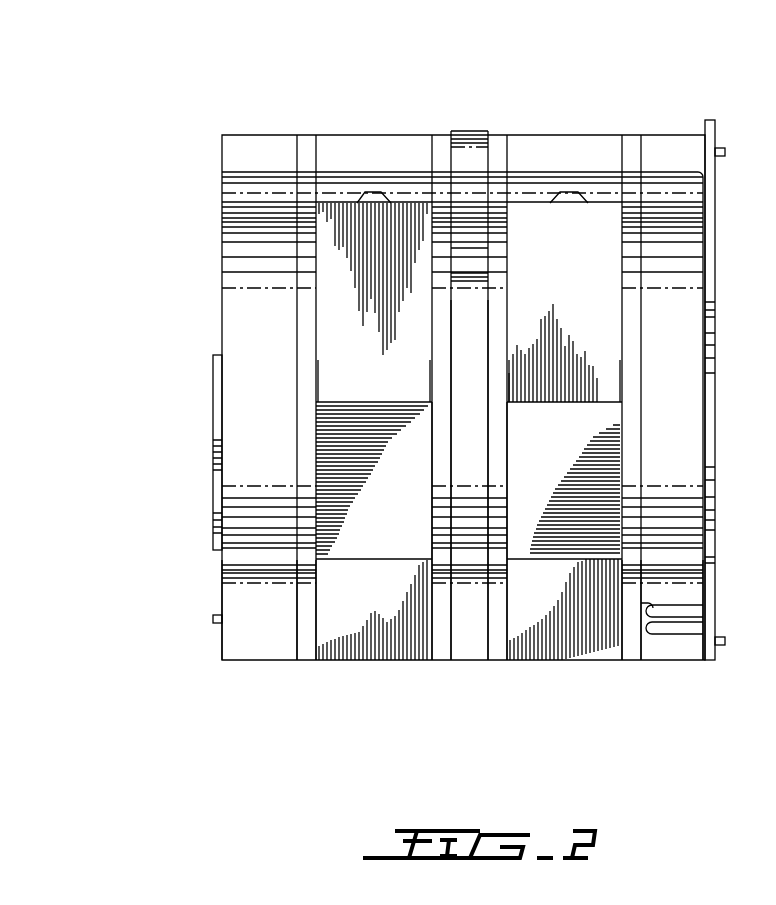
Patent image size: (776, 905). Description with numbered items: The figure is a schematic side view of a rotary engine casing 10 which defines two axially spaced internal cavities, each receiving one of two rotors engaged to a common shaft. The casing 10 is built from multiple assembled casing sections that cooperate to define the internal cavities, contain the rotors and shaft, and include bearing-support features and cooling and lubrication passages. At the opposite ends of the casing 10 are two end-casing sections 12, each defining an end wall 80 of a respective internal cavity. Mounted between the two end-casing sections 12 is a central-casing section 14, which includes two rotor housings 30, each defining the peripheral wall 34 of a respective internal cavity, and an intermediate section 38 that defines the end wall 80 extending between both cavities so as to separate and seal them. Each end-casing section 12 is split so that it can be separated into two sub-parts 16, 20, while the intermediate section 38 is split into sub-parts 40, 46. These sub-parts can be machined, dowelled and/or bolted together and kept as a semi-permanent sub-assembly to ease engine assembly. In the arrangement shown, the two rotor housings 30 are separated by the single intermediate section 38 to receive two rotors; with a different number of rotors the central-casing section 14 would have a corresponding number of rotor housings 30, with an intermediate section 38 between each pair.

The rotary engine casing 10 is at (162, 185).
The end-casing section 12 is at (315, 76).
The end wall 80 is at (715, 76).
The central-casing section 14 is at (622, 76).
The intermediate section 38 is at (507, 126).
The sub-part 16 is at (238, 660).
The sub-part 20 is at (307, 660).
The rotor housing 30 is at (385, 660).
The peripheral wall 34 is at (555, 660).
The sub-part 40 is at (470, 660).
The sub-part 46 is at (442, 660).